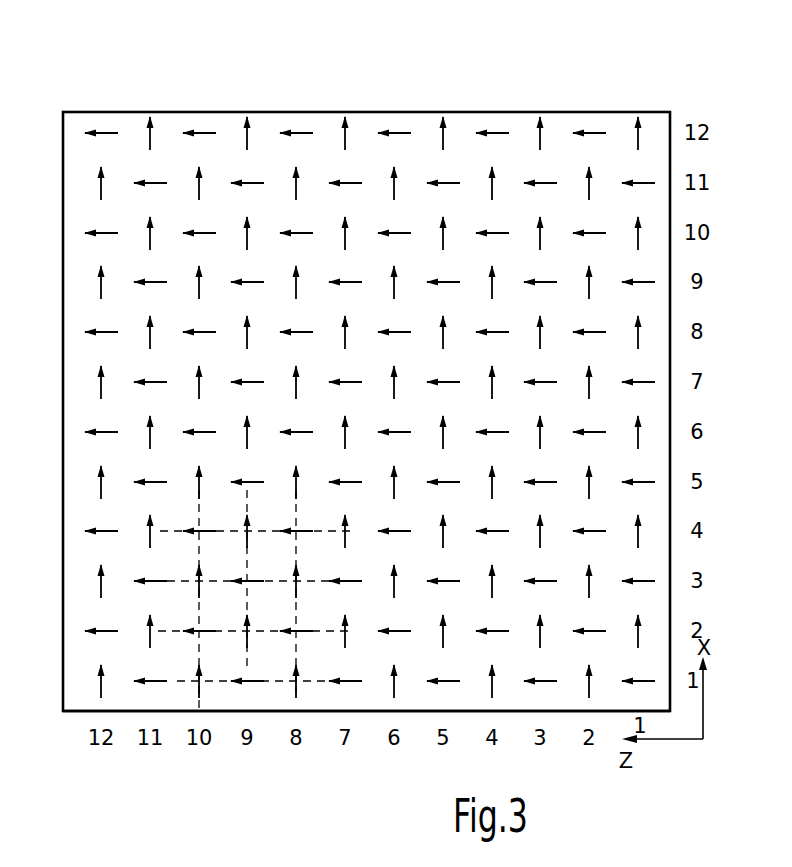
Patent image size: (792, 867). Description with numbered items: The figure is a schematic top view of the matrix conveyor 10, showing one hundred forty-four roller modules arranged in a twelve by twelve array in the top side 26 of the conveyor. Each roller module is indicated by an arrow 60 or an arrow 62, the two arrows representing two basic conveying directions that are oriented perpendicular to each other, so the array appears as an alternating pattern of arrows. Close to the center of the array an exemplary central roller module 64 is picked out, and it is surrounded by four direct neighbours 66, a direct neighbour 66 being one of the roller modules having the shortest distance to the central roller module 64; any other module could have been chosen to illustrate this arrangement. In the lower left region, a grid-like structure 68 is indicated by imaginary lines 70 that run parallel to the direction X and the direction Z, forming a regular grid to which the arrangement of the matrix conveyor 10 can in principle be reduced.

The matrix conveyor 10 is at (343, 78).
The top side 26 is at (468, 696).
The arrow 60 is at (602, 128).
The arrow 62 is at (640, 143).
The central roller module 64 is at (403, 331).
The direct neighbour 66 is at (396, 290).
The grid-like structure 68 is at (220, 662).
The imaginary lines 70 is at (198, 655).